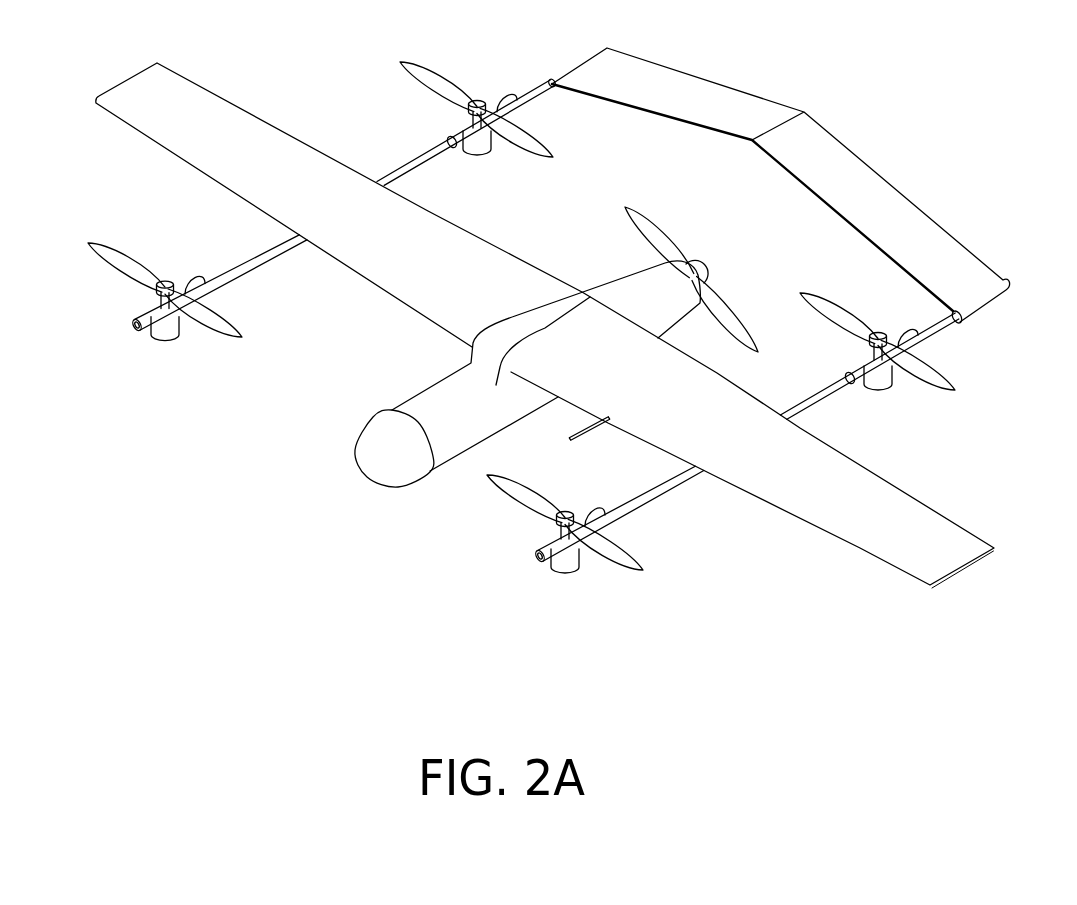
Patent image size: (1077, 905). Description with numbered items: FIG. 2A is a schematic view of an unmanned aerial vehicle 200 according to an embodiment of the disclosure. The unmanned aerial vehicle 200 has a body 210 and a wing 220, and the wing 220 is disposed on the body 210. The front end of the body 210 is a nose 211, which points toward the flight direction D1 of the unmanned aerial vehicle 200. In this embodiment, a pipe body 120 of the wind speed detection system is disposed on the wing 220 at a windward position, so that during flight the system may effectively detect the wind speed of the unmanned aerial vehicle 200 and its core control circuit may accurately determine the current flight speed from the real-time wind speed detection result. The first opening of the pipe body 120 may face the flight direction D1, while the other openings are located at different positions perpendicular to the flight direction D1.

The unmanned aerial vehicle 200 is at (577, 330).
The body 210 is at (526, 347).
The nose 211 is at (372, 435).
The wing 220 is at (283, 150).
The pipe body 120 is at (593, 432).
The flight direction D1 is at (327, 492).